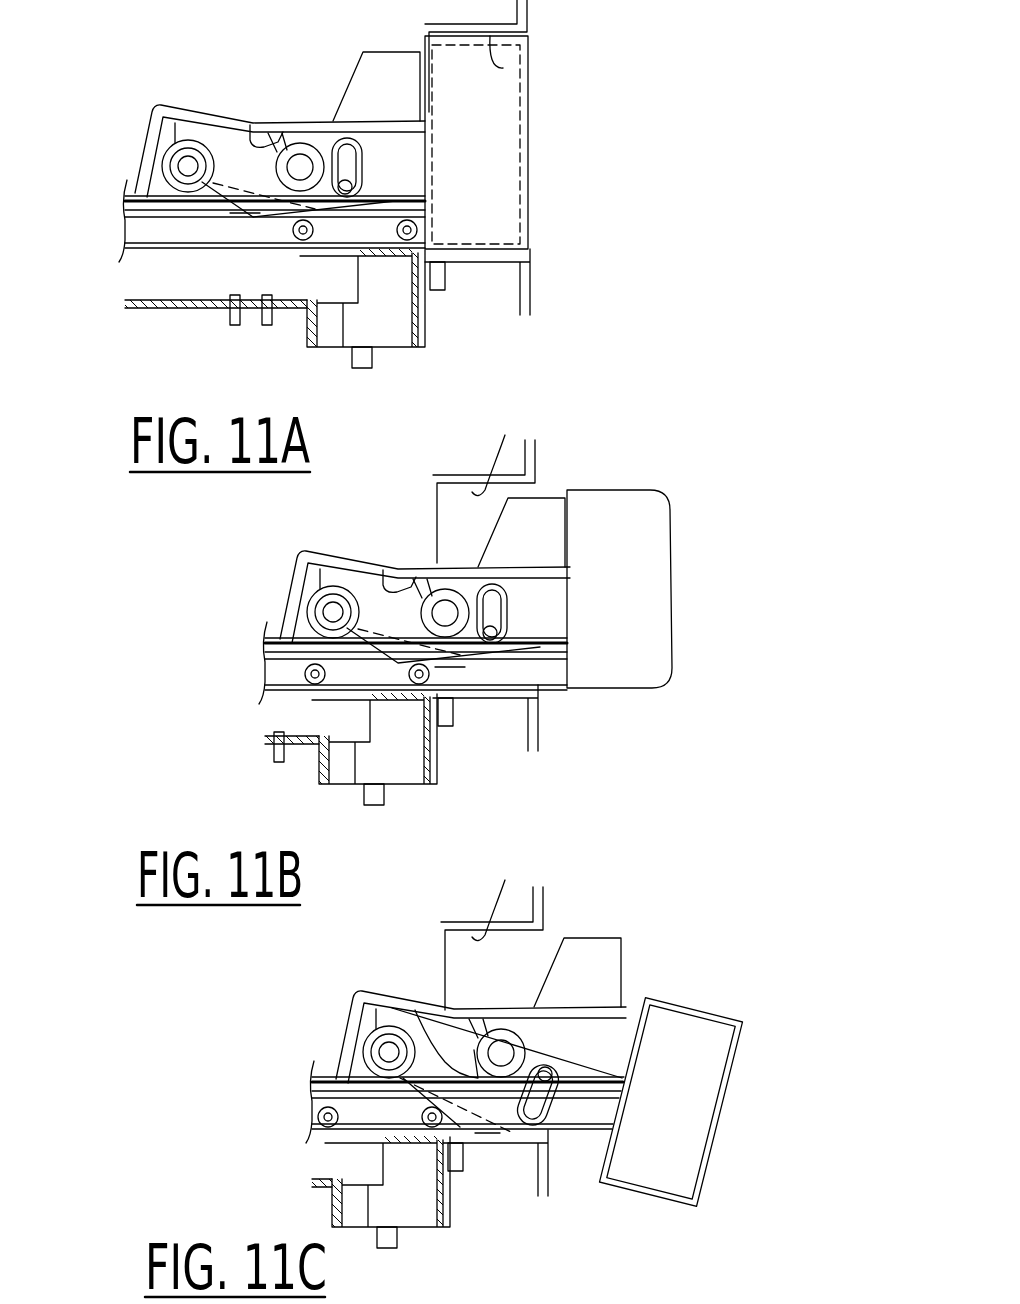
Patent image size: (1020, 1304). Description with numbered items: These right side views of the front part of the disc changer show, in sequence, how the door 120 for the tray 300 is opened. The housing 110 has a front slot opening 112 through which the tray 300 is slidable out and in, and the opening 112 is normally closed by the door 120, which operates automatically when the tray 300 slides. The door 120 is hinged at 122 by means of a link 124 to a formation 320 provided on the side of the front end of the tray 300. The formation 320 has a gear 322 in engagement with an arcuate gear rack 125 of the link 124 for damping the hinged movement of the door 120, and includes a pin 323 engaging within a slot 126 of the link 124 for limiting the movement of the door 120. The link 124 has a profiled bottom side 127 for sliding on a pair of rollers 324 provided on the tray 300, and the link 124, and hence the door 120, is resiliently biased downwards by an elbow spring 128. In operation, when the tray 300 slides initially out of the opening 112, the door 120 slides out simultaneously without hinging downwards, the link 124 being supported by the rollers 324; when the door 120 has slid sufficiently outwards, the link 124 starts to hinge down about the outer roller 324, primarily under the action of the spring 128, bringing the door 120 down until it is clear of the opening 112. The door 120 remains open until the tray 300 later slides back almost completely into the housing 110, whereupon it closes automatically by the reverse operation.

In FIG. 11A, the housing 110 is at (528, 8).
In FIG. 11B, the housing 110 is at (537, 465).
In FIG. 11C, the housing 110 is at (545, 903).
In FIG. 11A, the front slot opening 112 is at (503, 68).
In FIG. 11B, the front slot opening 112 is at (511, 457).
In FIG. 11C, the front slot opening 112 is at (510, 900).
In FIG. 11A, the door 120 is at (533, 117).
In FIG. 11B, the door 120 is at (672, 525).
In FIG. 11C, the door 120 is at (734, 1057).
In FIG. 11A, the hinge 122 is at (190, 160).
In FIG. 11B, the hinge 122 is at (335, 608).
In FIG. 11C, the hinge 122 is at (388, 1050).
In FIG. 11A, the link 124 is at (393, 133).
In FIG. 11B, the link 124 is at (526, 580).
In FIG. 11C, the link 124 is at (573, 1062).
In FIG. 11A, the arcuate gear rack 125 is at (250, 125).
In FIG. 11B, the arcuate gear rack 125 is at (383, 570).
In FIG. 11C, the arcuate gear rack 125 is at (415, 1010).
In FIG. 11A, the slot 126 is at (362, 155).
In FIG. 11B, the slot 126 is at (507, 602).
In FIG. 11C, the slot 126 is at (553, 1117).
In FIG. 11A, the profiled bottom side 127 is at (243, 213).
In FIG. 11B, the profiled bottom side 127 is at (447, 667).
In FIG. 11C, the profiled bottom side 127 is at (487, 1133).
In FIG. 11A, the elbow spring 128 is at (175, 128).
In FIG. 11B, the elbow spring 128 is at (320, 577).
In FIG. 11C, the elbow spring 128 is at (375, 1016).
In FIG. 11A, the tray 300 is at (120, 225).
In FIG. 11B, the tray 300 is at (263, 667).
In FIG. 11C, the tray 300 is at (313, 1103).
In FIG. 11A, the formation 320 is at (147, 157).
In FIG. 11B, the formation 320 is at (292, 608).
In FIG. 11C, the formation 320 is at (352, 1047).
In FIG. 11A, the gear 322 is at (302, 147).
In FIG. 11B, the gear 322 is at (448, 600).
In FIG. 11C, the gear 322 is at (498, 1040).
In FIG. 11A, the pin 323 is at (352, 187).
In FIG. 11B, the pin 323 is at (497, 635).
In FIG. 11C, the pin 323 is at (551, 1073).
In FIG. 11A, the rollers 324 is at (305, 242).
In FIG. 11B, the rollers 324 is at (318, 688).
In FIG. 11C, the rollers 324 is at (333, 1127).